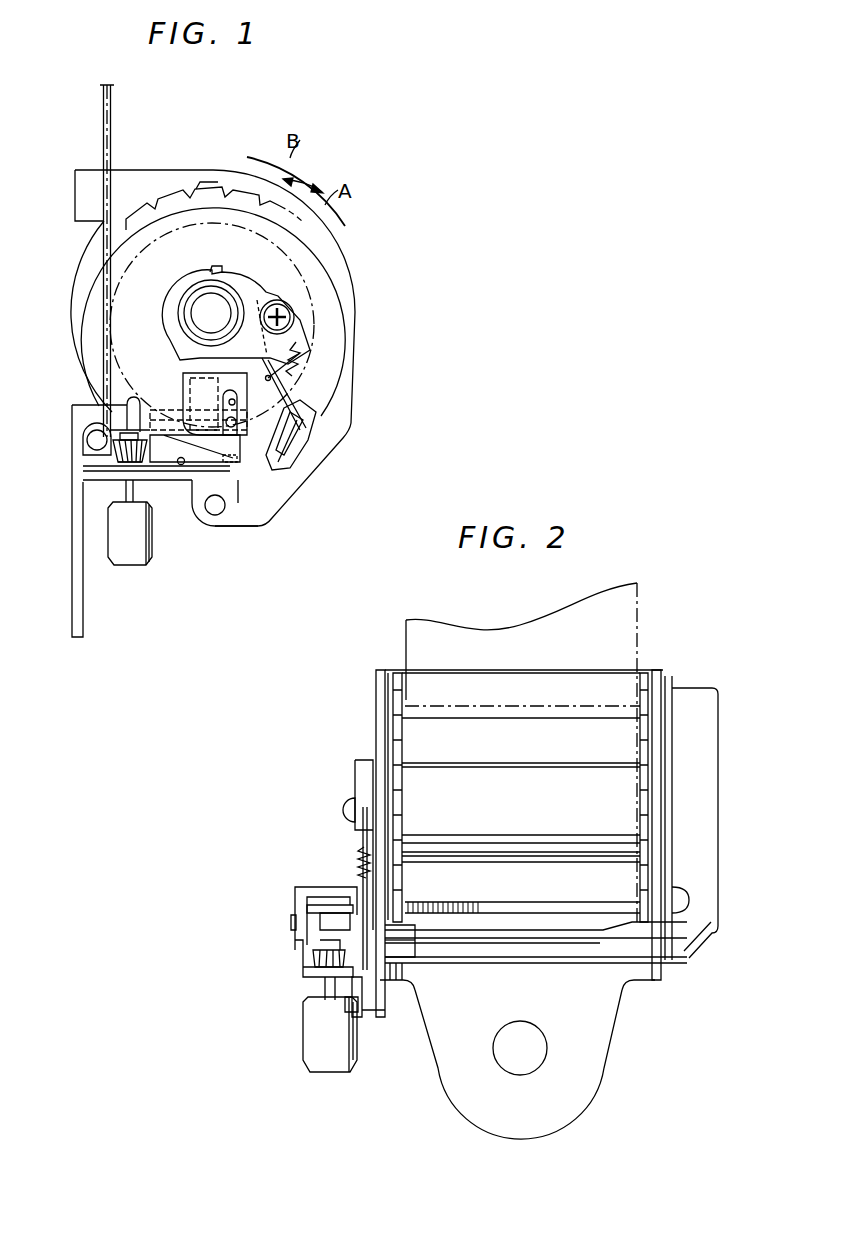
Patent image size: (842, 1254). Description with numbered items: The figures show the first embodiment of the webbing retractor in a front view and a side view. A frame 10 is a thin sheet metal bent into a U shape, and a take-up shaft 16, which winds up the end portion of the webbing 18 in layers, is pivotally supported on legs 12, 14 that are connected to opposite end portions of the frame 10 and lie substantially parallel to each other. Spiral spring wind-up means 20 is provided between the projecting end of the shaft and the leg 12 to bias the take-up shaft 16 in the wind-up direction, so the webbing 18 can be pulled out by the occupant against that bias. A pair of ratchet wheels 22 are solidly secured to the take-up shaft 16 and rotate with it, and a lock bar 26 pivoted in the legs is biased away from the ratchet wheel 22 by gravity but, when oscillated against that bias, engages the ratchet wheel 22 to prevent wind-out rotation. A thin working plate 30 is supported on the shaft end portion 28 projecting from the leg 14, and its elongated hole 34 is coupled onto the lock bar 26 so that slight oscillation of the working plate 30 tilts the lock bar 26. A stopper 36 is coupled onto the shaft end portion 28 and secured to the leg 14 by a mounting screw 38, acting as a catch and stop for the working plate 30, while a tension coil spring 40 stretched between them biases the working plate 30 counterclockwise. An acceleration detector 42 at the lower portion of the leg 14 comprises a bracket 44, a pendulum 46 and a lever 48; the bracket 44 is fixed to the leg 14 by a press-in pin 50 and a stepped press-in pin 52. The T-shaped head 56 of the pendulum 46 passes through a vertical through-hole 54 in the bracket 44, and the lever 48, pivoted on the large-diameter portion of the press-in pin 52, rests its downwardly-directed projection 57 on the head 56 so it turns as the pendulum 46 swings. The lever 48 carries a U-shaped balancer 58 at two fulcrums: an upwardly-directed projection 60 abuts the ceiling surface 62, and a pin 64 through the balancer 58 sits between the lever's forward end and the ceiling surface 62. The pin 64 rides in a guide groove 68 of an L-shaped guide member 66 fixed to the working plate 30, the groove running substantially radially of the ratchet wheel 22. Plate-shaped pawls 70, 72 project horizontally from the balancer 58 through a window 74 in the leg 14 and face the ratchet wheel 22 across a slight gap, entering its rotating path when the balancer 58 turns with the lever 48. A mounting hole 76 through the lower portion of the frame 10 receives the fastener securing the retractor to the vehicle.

In FIG. 1, the frame 10 is at (75, 188).
In FIG. 2, the frame 10 is at (575, 670).
In FIG. 2, the leg 12 is at (658, 670).
In FIG. 1, the leg 14 is at (160, 170).
In FIG. 2, the leg 14 is at (376, 693).
In FIG. 2, the take-up shaft 16 is at (497, 765).
In FIG. 1, the webbing 18 is at (111, 133).
In FIG. 2, the webbing 18 is at (450, 625).
In FIG. 2, the spiral spring wind-up means 20 is at (718, 742).
In FIG. 1, the ratchet wheel 22 is at (218, 183).
In FIG. 2, the ratchet wheel 22 is at (396, 673).
In FIG. 1, the lock bar 26 is at (300, 452).
In FIG. 2, the lock bar 26 is at (527, 958).
In FIG. 1, the shaft end portion 28 is at (205, 300).
In FIG. 1, the working plate 30 is at (304, 408).
In FIG. 2, the working plate 30 is at (363, 890).
In FIG. 1, the elongated hole 34 is at (292, 466).
In FIG. 1, the stopper 36 is at (262, 291).
In FIG. 2, the stopper 36 is at (363, 760).
In FIG. 1, the mounting screw 38 is at (292, 311).
In FIG. 2, the mounting screw 38 is at (345, 803).
In FIG. 1, the tension coil spring 40 is at (300, 360).
In FIG. 2, the tension coil spring 40 is at (360, 850).
In FIG. 1, the acceleration detector 42 is at (195, 560).
In FIG. 2, the acceleration detector 42 is at (260, 918).
In FIG. 1, the bracket 44 is at (236, 520).
In FIG. 2, the bracket 44 is at (360, 1018).
In FIG. 1, the pendulum 46 is at (130, 567).
In FIG. 2, the pendulum 46 is at (330, 1074).
In FIG. 1, the lever 48 is at (112, 410).
In FIG. 2, the lever 48 is at (303, 957).
In FIG. 1, the press-in pin 50 is at (214, 516).
In FIG. 2, the press-in pin 50 is at (345, 1005).
In FIG. 1, the press-in pin with a step 52 is at (86, 437).
In FIG. 2, the through-hole 54 is at (327, 985).
In FIG. 1, the T-shaped head 56 is at (128, 468).
In FIG. 2, the T-shaped head 56 is at (322, 952).
In FIG. 1, the downwardly-directed projection 57 is at (122, 460).
In FIG. 2, the downwardly-directed projection 57 is at (315, 958).
In FIG. 1, the balancer 58 is at (152, 422).
In FIG. 2, the balancer 58 is at (308, 907).
In FIG. 1, the upwardly-directed projection 60 is at (190, 418).
In FIG. 2, the ceiling surface 62 is at (326, 916).
In FIG. 1, the pin 64 is at (240, 406).
In FIG. 2, the pin 64 is at (291, 923).
In FIG. 1, the guide member 66 is at (187, 373).
In FIG. 2, the guide member 66 is at (300, 888).
In FIG. 1, the guide groove 68 is at (282, 378).
In FIG. 1, the pawl 70 is at (181, 482).
In FIG. 1, the pawl 72 is at (242, 470).
In FIG. 2, the pawl 72 is at (412, 960).
In FIG. 1, the window 74 is at (183, 466).
In FIG. 2, the mounting hole 76 is at (505, 1070).